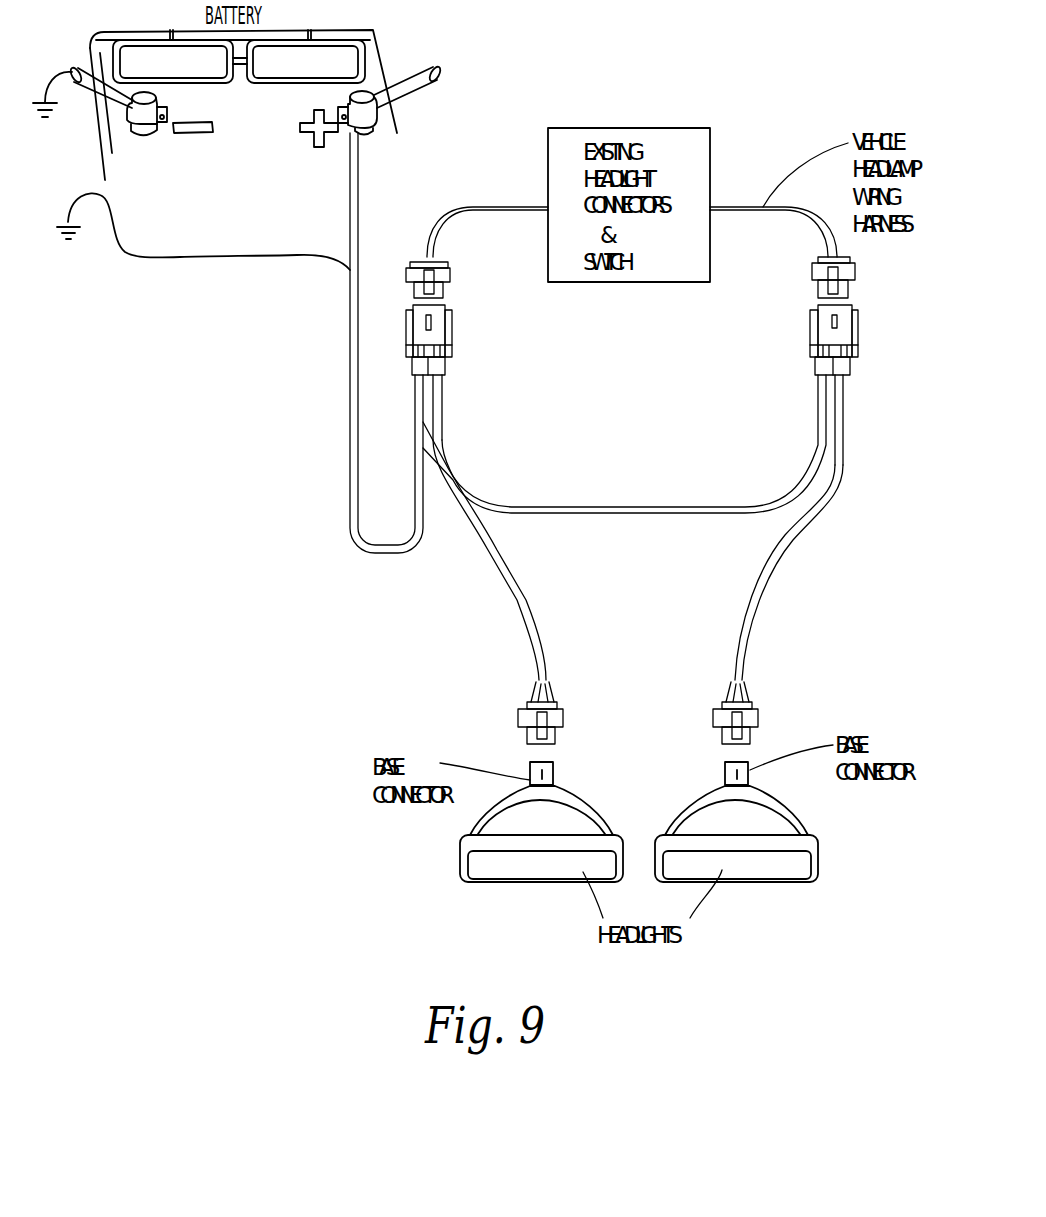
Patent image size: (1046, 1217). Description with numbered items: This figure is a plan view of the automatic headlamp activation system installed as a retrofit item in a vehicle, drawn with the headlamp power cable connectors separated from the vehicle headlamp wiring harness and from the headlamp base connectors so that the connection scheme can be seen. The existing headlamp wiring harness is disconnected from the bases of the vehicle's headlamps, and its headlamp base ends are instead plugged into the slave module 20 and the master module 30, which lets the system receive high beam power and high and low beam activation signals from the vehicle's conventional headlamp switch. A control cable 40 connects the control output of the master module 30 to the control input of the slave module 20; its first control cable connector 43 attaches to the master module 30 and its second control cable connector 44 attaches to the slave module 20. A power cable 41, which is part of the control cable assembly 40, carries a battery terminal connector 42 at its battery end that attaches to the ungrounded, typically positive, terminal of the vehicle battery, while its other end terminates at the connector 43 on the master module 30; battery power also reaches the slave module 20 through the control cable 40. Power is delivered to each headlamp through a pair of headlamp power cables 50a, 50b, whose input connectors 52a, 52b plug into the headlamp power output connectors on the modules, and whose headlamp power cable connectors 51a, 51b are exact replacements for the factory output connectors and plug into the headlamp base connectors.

The slave module 20 is at (860, 326).
The master module 30 is at (458, 327).
The control cable 40 is at (594, 515).
The power cable 41 is at (350, 436).
The battery terminal connector 42 is at (372, 134).
The first control cable connector 43 is at (412, 372).
The second control cable connector 44 is at (818, 375).
The headlamp power cable 50a is at (837, 483).
The headlamp power cable 50b is at (491, 549).
The headlamp power cable connector 51a is at (752, 712).
The headlamp power cable connector 51b is at (522, 715).
The input connector 52a is at (847, 376).
The input connector 52b is at (444, 377).